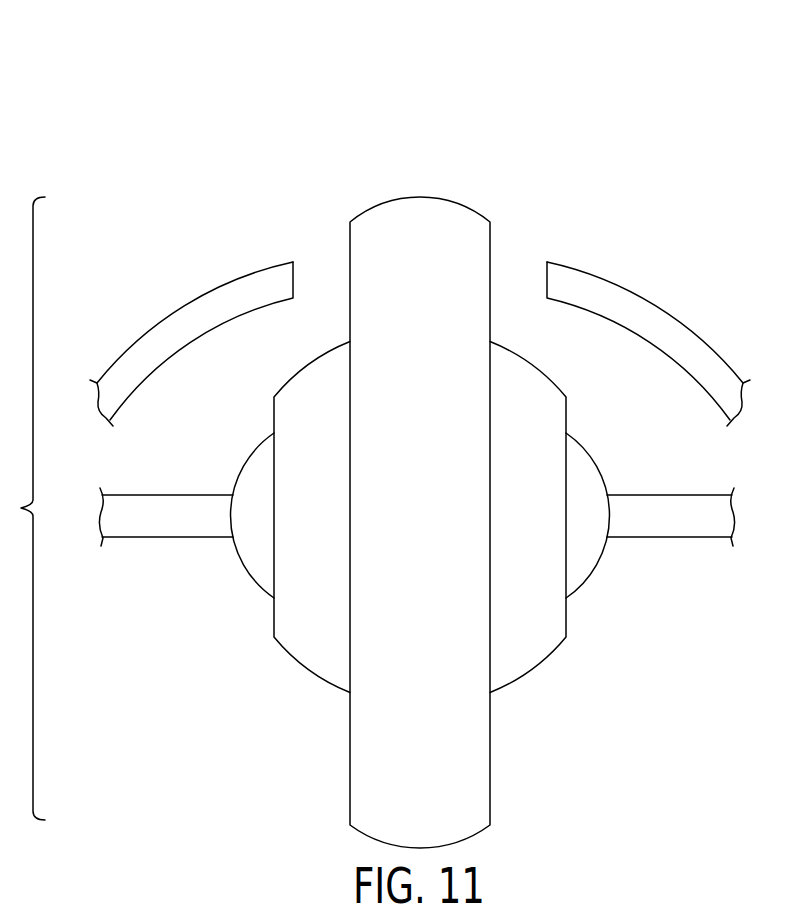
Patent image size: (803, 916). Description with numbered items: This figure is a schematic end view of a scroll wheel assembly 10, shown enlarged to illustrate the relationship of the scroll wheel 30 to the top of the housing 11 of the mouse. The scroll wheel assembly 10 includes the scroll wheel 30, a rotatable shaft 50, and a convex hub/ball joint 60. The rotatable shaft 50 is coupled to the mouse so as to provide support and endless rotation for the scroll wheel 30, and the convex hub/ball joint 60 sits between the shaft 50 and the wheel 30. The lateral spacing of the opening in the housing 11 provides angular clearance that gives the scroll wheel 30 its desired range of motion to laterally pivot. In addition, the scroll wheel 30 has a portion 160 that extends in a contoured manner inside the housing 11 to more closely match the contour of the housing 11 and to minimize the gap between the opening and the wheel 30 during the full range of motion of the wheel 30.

The scroll wheel assembly 10 is at (176, 98).
The housing 11 is at (205, 296).
The scroll wheel 30 is at (350, 760).
The rotatable shaft 50 is at (146, 522).
The convex hub/ball joint 60 is at (250, 572).
The portion 160 is at (332, 349).